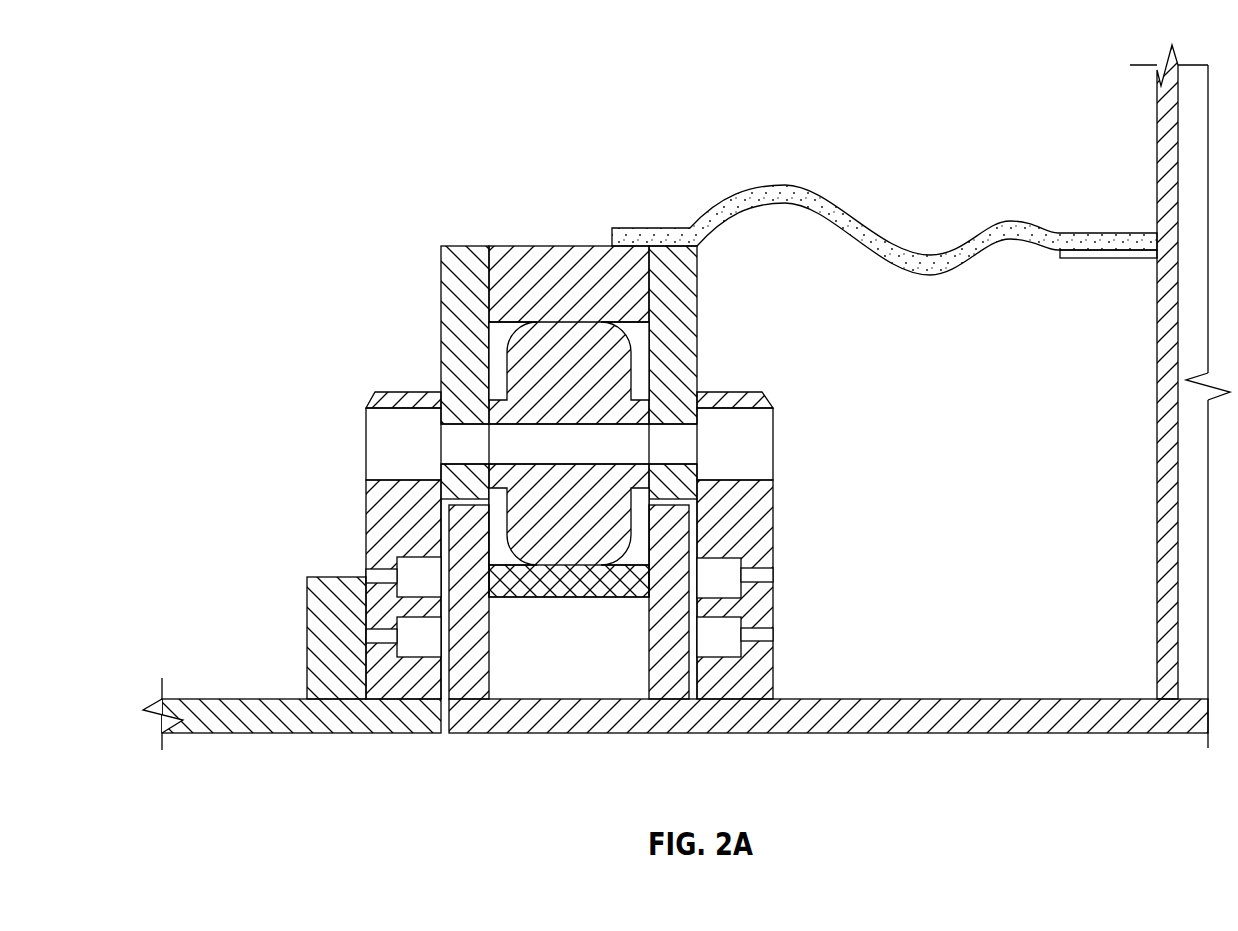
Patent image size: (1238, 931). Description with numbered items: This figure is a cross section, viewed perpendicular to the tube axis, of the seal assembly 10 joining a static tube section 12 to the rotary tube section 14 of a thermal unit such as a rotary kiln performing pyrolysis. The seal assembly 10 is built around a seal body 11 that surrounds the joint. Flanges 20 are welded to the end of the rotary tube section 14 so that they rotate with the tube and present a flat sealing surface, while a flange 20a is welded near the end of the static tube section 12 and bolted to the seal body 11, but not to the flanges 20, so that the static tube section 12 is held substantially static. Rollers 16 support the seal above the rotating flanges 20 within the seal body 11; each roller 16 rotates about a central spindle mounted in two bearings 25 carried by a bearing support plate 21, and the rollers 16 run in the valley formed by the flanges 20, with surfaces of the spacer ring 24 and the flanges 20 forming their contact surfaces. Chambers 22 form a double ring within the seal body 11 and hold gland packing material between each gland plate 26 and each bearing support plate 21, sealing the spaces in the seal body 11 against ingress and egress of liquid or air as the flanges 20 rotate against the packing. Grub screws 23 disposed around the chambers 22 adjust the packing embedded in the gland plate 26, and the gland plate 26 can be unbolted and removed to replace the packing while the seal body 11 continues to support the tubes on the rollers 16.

The seal assembly 10 is at (527, 156).
The seal body 11 is at (522, 246).
The static tube section 12 is at (330, 710).
The rotary tube section 14 is at (712, 706).
The rollers 16 is at (600, 355).
The flanges 20 is at (470, 605).
The flange 20a is at (330, 592).
The bearing support plate 21 is at (676, 365).
The chambers 22 is at (765, 638).
The grub screws 23 is at (765, 576).
The spacer ring 24 is at (580, 246).
The bearings 25 is at (470, 420).
The gland plate 26 is at (757, 394).